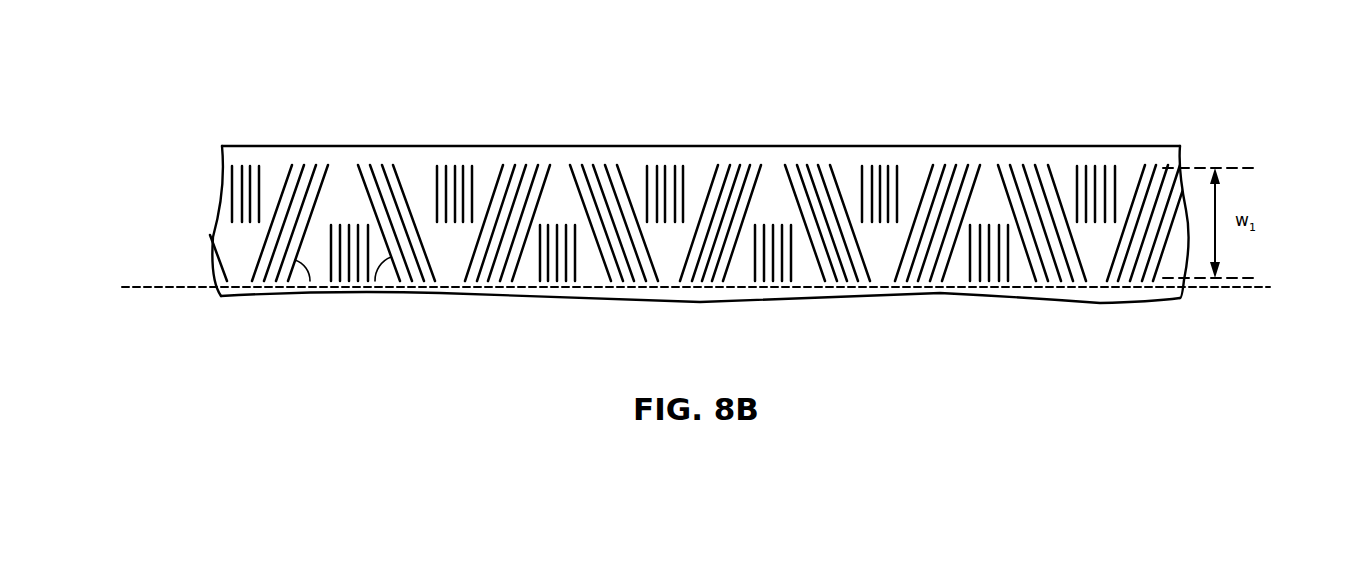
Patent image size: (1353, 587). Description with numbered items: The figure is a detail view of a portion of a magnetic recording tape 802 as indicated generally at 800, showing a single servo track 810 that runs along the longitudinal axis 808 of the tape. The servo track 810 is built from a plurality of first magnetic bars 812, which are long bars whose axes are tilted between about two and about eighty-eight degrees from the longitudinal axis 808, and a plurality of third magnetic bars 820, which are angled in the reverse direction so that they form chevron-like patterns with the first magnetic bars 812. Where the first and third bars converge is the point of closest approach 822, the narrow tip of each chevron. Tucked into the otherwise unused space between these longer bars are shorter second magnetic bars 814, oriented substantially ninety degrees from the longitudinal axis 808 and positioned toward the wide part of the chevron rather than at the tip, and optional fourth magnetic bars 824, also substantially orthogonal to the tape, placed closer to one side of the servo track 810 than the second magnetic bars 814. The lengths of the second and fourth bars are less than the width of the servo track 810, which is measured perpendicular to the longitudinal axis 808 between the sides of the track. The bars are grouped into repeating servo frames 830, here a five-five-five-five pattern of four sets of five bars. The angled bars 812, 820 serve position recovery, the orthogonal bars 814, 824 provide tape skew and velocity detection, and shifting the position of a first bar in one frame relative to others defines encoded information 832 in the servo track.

The patterned layer structure 800 is at (203, 53).
The magnetic recording tape 802 is at (1017, 148).
The longitudinal axis 808 is at (717, 293).
The servo track 810 is at (180, 167).
The first magnetic bars 812 is at (303, 290).
The second magnetic bars 814 is at (375, 290).
The third magnetic bars 820 is at (448, 290).
The point of closest approach 822 is at (558, 165).
The fourth magnetic bars 824 is at (482, 163).
The servo frame 830 is at (900, 308).
The encoded information 832 is at (723, 160).